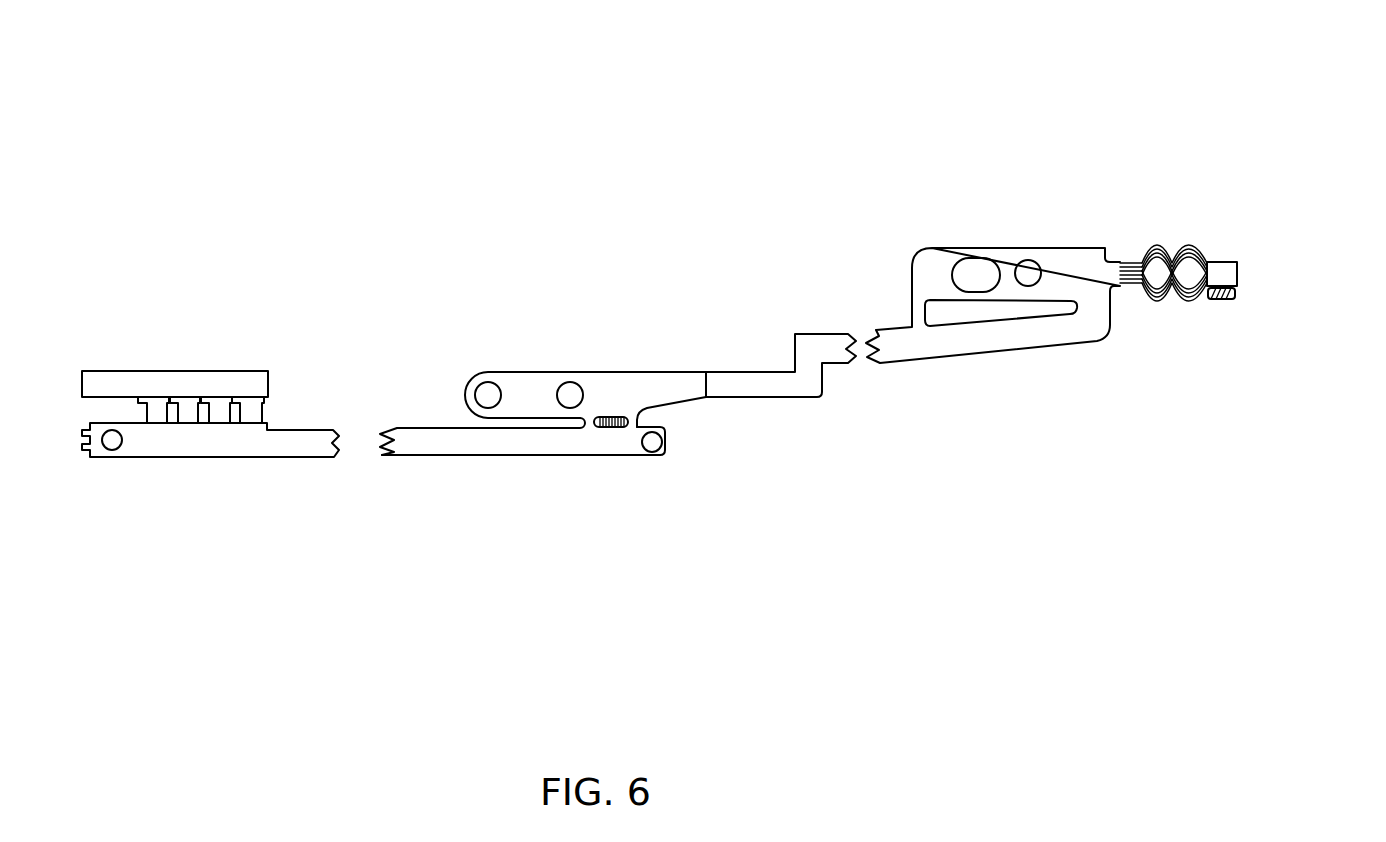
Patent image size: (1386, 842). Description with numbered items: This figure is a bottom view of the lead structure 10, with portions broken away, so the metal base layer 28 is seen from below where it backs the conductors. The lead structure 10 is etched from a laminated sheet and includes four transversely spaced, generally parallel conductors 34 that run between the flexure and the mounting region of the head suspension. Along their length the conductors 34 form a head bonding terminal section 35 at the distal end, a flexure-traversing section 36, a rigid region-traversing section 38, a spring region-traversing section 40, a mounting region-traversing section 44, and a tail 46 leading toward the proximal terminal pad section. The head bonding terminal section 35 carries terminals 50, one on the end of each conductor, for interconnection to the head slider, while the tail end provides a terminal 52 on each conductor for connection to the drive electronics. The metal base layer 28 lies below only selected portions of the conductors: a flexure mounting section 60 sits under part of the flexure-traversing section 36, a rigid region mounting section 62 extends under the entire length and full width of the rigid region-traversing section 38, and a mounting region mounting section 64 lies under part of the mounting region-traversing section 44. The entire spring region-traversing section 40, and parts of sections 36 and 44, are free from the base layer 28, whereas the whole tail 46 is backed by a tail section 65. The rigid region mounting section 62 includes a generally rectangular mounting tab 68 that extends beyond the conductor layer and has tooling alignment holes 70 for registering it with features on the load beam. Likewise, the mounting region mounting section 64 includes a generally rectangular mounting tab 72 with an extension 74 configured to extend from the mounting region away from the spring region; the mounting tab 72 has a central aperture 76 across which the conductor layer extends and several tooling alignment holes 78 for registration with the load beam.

The lead structure 10 is at (358, 204).
The metal base layer 28 is at (508, 445).
The conductors 34 is at (1133, 262).
The head bonding terminal section 35 is at (1253, 297).
The flexure-traversing section 36 is at (1212, 111).
The rigid region-traversing section 38 is at (966, 174).
The spring region-traversing section 40 is at (792, 330).
The mounting region-traversing section 44 is at (614, 256).
The tail 46 is at (223, 446).
The terminals 50 is at (1228, 300).
The terminal 52 is at (255, 412).
The flexure mounting section 60 is at (1225, 265).
The rigid region mounting section 62 is at (938, 358).
The mounting region mounting section 64 is at (665, 433).
The tail section 65 is at (278, 442).
The mounting tab 68 is at (925, 250).
The tooling alignment holes 70 is at (1028, 260).
The mounting tab 72 is at (607, 453).
The extension 74 is at (530, 387).
The central aperture 76 is at (628, 420).
The tooling alignment holes 78 is at (568, 383).